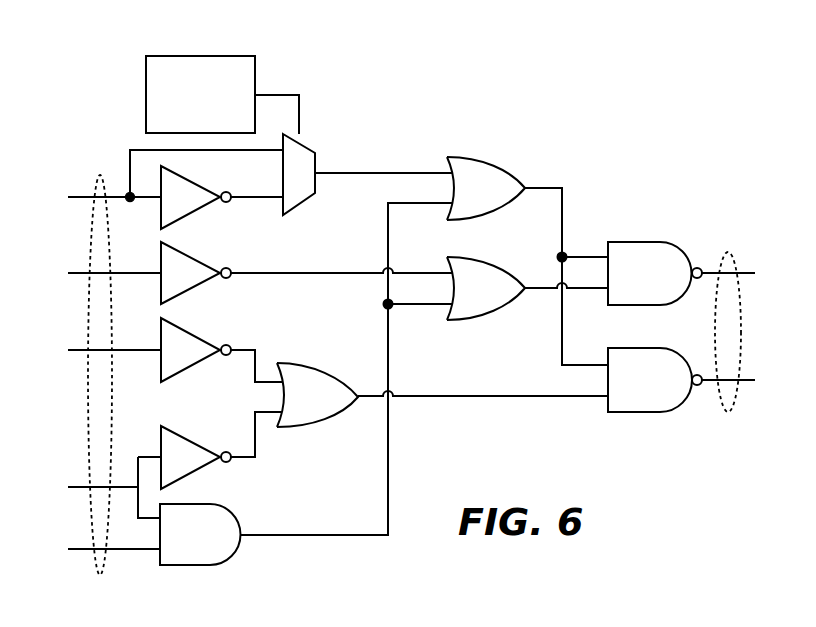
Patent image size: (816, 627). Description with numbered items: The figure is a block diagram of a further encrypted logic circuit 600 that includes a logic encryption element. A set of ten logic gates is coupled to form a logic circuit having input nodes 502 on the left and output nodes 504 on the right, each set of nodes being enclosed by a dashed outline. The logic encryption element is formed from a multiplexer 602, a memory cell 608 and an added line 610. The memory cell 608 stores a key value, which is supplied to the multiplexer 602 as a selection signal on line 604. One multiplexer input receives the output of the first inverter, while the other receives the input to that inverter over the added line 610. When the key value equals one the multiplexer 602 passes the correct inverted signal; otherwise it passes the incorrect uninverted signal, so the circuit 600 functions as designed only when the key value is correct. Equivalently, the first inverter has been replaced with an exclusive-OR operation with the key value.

The circuit 600 is at (490, 456).
The input nodes 502 is at (98, 184).
The output nodes 504 is at (728, 252).
The multiplexer 602 is at (315, 158).
The line 604 is at (299, 109).
The memory cell 608 is at (182, 129).
The added line 610 is at (130, 155).